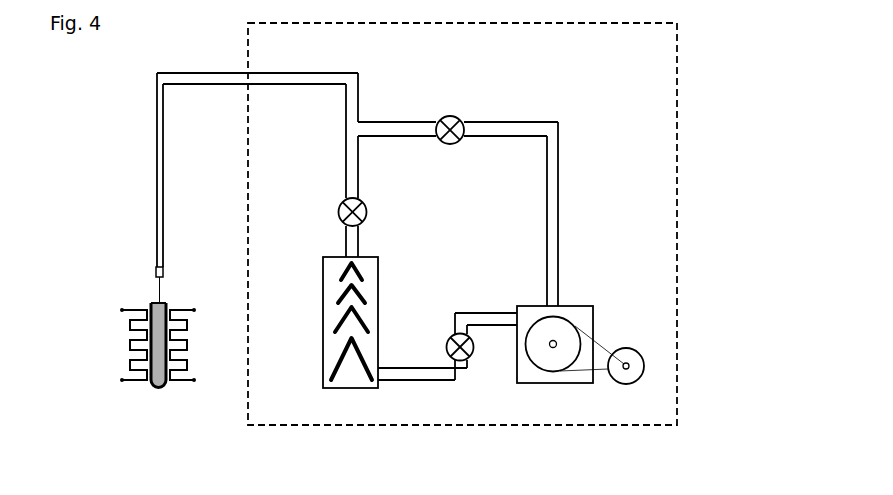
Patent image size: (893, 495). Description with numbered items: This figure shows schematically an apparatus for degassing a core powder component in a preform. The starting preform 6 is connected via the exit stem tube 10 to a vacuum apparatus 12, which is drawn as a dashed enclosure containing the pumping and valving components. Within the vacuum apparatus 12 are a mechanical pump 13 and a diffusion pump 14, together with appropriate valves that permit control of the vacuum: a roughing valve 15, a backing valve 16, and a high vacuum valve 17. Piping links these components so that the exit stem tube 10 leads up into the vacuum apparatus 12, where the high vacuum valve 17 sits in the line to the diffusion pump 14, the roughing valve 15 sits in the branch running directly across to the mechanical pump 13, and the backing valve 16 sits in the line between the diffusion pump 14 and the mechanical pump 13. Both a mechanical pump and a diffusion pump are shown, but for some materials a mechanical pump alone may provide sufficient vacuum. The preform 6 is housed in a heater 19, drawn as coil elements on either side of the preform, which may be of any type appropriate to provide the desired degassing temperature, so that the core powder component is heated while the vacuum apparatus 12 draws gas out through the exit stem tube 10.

The starting preform 6 is at (159, 397).
The exit stem tube 10 is at (171, 283).
The vacuum apparatus 12 is at (680, 118).
The mechanical pump 13 is at (587, 301).
The diffusion pump 14 is at (320, 265).
The roughing valve 15 is at (458, 111).
The backing valve 16 is at (448, 335).
The high vacuum valve 17 is at (335, 202).
The heater 19 is at (130, 306).